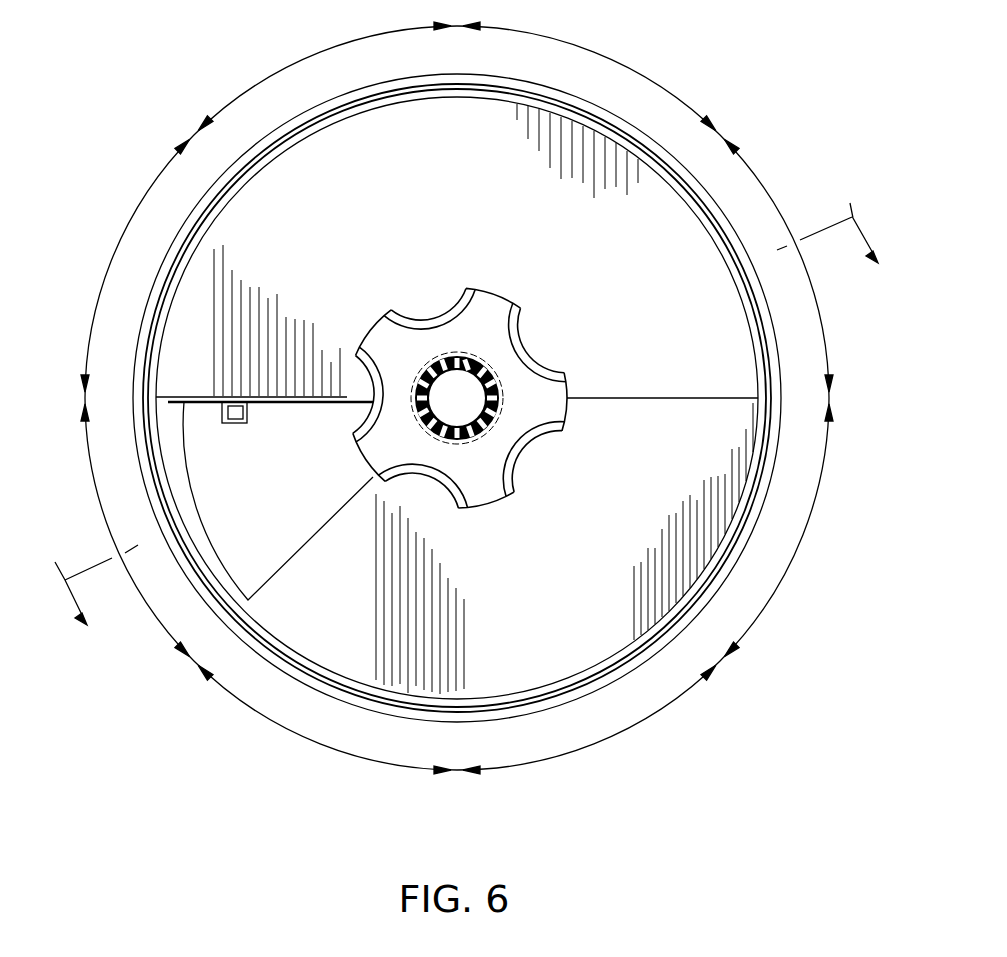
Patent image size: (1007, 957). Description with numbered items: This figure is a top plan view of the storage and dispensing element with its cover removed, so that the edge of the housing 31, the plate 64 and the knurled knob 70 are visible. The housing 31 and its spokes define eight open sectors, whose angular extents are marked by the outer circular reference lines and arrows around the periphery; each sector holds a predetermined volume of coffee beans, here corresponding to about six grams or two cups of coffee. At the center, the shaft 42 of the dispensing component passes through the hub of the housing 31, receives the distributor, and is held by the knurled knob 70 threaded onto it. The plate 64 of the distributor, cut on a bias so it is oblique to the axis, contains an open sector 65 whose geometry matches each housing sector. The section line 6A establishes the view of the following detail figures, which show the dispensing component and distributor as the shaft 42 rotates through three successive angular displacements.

The housing 31 is at (660, 652).
The plate 64 is at (690, 462).
The open sector 65 is at (296, 484).
The knurled knob 70 is at (507, 362).
The shaft 42 is at (455, 400).
The section line 6A is at (457, 397).